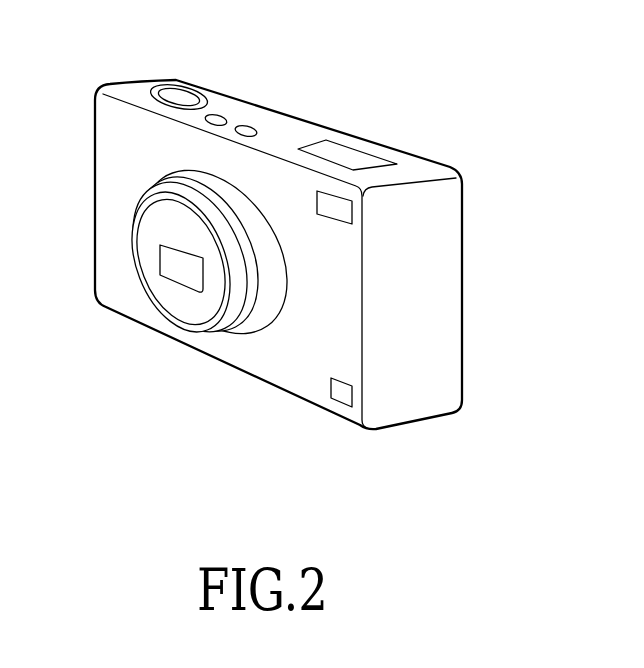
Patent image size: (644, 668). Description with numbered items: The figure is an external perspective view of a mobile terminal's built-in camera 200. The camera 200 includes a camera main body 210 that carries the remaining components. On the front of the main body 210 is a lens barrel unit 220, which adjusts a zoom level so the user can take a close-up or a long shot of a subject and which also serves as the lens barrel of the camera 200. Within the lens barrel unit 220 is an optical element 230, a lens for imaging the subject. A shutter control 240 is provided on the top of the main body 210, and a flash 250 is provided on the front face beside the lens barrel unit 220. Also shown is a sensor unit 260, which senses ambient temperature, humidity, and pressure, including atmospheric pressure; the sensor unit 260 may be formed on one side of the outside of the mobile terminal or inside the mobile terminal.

The built-in camera 200 is at (452, 120).
The camera main body 210 is at (289, 132).
The lens barrel unit 220 is at (237, 307).
The optical element 230 is at (180, 268).
The shutter control 240 is at (187, 90).
The flash 250 is at (343, 212).
The sensor unit 260 is at (343, 397).